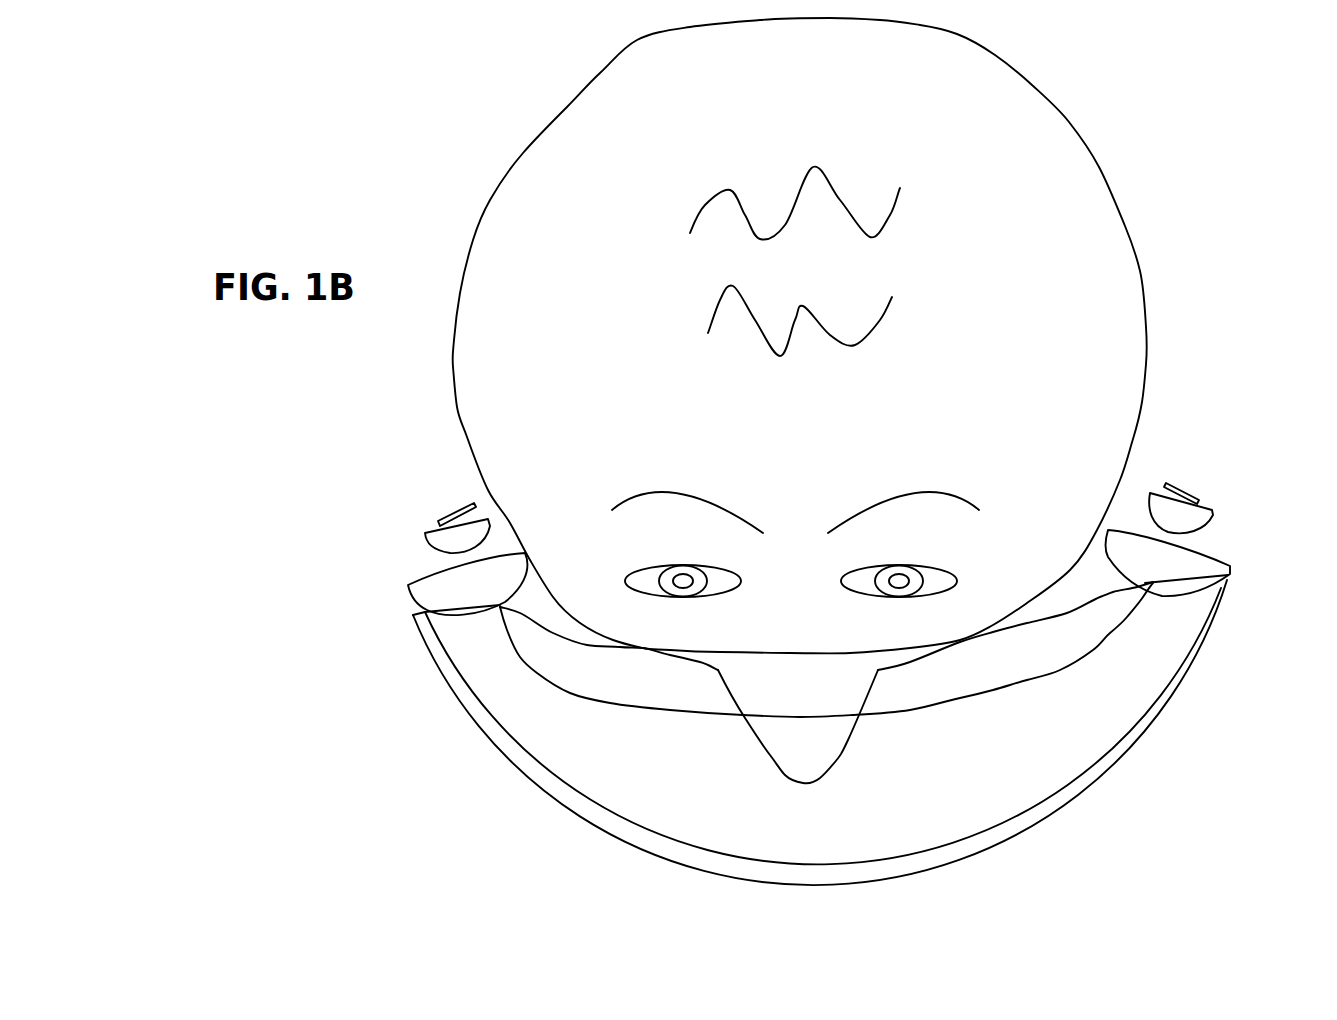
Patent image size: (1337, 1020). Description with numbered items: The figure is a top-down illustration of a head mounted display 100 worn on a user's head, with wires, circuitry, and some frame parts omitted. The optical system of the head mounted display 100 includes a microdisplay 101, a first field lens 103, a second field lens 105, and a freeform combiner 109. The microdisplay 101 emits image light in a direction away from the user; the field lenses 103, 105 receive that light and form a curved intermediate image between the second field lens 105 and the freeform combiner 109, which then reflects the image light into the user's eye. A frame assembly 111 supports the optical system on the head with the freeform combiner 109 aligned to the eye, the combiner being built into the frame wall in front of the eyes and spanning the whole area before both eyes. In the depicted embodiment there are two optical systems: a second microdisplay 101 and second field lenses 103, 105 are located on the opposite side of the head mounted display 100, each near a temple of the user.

The head mounted display 100 is at (822, 934).
The microdisplay 101 is at (467, 507).
The first field lens 103 is at (425, 538).
The second field lens 105 is at (425, 587).
The freeform combiner 109 is at (603, 775).
The frame assembly 111 is at (950, 807).